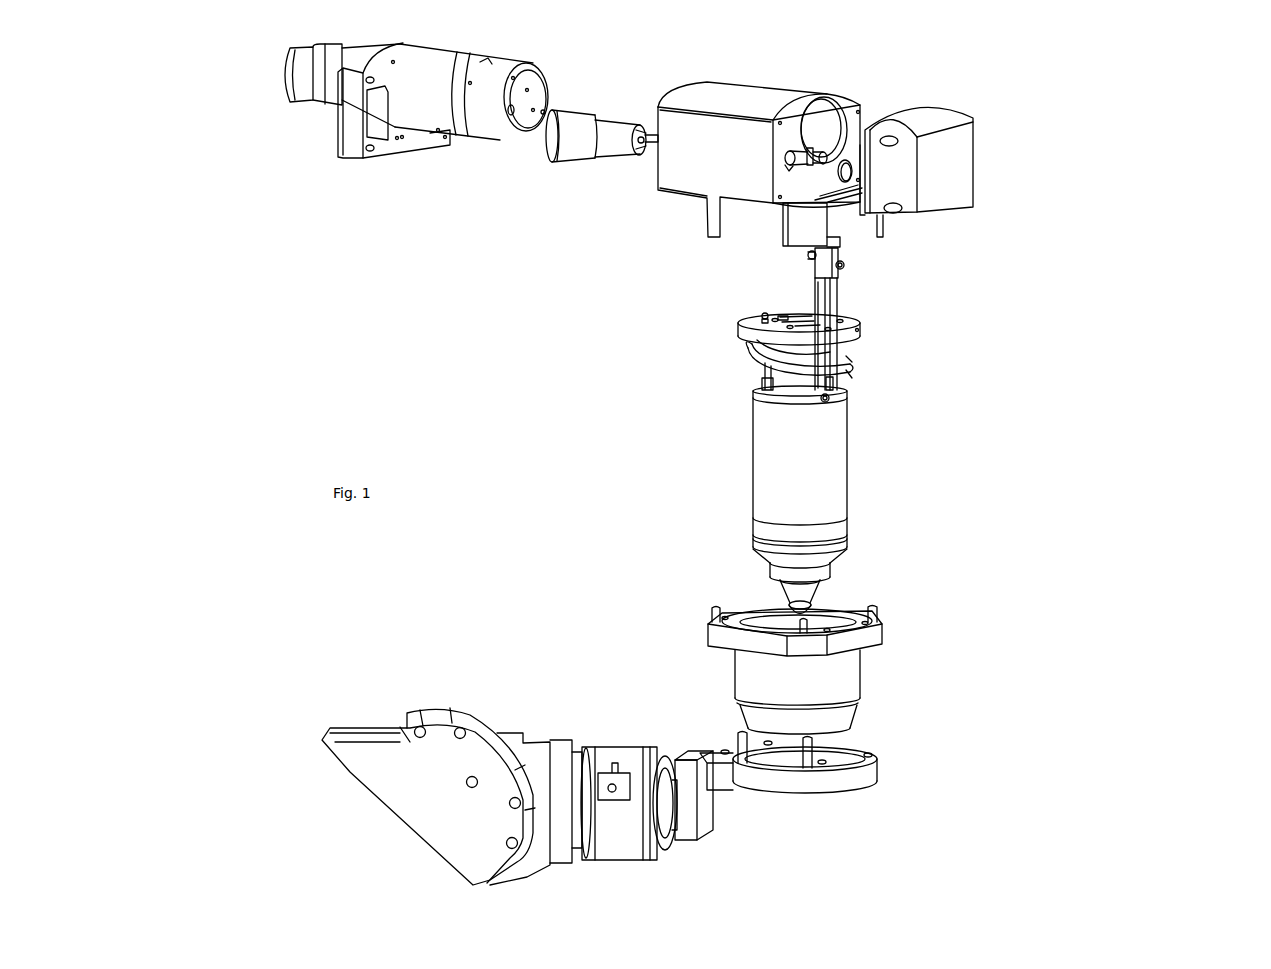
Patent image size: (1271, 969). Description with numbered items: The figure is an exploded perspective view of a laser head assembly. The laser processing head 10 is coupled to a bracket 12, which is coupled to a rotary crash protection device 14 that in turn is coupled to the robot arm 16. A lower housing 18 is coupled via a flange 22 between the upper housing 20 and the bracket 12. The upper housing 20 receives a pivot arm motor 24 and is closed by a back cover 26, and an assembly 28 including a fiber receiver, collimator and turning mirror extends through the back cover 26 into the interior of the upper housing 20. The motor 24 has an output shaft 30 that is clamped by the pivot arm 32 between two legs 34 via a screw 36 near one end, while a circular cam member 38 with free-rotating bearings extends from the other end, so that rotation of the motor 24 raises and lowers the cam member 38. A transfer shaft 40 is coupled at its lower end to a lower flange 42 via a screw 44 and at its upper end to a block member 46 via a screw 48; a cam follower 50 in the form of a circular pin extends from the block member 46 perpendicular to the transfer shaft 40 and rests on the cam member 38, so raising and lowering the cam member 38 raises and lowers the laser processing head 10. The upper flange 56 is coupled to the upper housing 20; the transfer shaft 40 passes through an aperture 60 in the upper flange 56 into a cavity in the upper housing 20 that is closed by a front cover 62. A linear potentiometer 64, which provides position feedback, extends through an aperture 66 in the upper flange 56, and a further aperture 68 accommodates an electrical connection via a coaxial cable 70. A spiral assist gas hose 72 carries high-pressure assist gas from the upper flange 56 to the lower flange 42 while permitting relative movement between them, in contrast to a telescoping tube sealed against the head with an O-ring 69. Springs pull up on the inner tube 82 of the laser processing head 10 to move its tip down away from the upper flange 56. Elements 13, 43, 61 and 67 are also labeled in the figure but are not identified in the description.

The laser processing head 10 is at (750, 480).
The bracket 12 is at (705, 745).
The applicator assembly 13 is at (967, 588).
The rotary crash protection device 14 is at (548, 740).
The robot arm 16 is at (455, 720).
The lower housing 18 is at (866, 676).
The upper housing 20 is at (793, 83).
The flange 22 is at (870, 632).
The pivot arm motor 24 is at (553, 156).
The back cover 26 is at (423, 140).
The assembly including fiber receiver, collimator and turning mirror 28 is at (548, 86).
The output shaft 30 is at (650, 141).
The pivot arm 32 is at (795, 152).
The legs 34 is at (666, 108).
The screw 36 is at (803, 160).
The cam member 38 is at (848, 164).
The transfer shaft 40 is at (820, 312).
The lower flange 42 is at (750, 388).
The ring 43 is at (845, 527).
The screw 44 is at (830, 397).
The block member 46 is at (842, 264).
The screw 48 is at (822, 276).
The cam follower 50 is at (780, 247).
The upper flange 56 is at (742, 332).
The aperture 60 is at (860, 330).
The slot 61 is at (893, 142).
The front cover 62 is at (978, 176).
The linear potentiometer 64 is at (817, 312).
The aperture 66 is at (846, 336).
The flange 67 is at (822, 196).
The aperture 68 is at (765, 316).
The O-ring 69 is at (781, 318).
The coaxial cable 70 is at (848, 358).
The assist gas hose 72 is at (848, 374).
The inner tube 82 is at (752, 362).